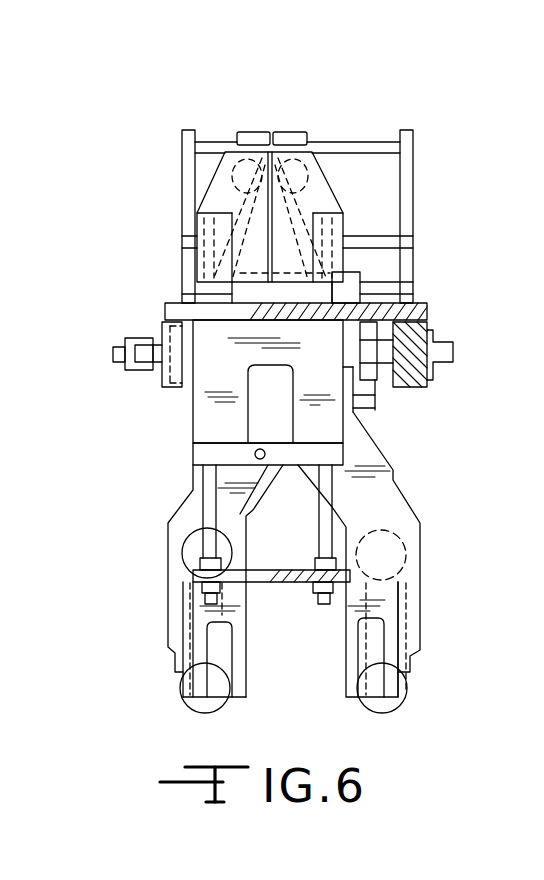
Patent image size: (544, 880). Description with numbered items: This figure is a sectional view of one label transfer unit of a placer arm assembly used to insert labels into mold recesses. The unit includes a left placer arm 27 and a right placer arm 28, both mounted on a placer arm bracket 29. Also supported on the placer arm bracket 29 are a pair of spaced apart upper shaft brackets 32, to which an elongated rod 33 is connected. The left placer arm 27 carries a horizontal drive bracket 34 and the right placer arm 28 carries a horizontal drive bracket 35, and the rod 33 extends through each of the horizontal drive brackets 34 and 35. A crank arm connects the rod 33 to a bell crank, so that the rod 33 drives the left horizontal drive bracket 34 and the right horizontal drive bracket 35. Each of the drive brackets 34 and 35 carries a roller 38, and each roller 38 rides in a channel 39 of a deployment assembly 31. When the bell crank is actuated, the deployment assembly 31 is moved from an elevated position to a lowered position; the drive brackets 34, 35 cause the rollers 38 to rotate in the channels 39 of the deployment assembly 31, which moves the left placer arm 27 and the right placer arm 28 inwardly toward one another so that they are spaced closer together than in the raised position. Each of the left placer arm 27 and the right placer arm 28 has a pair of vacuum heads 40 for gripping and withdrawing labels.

The left placer arm 27 is at (175, 517).
The right placer arm 28 is at (412, 503).
The placer arm bracket 29 is at (427, 306).
The deployment assembly 31 is at (228, 167).
The upper shaft brackets 32 is at (182, 134).
The elongated rod 33 is at (363, 142).
The horizontal drive bracket 34 is at (250, 133).
The horizontal drive bracket 35 is at (293, 133).
The roller 38 is at (228, 175).
The channel 39 is at (222, 202).
The vacuum heads 40 is at (182, 552).